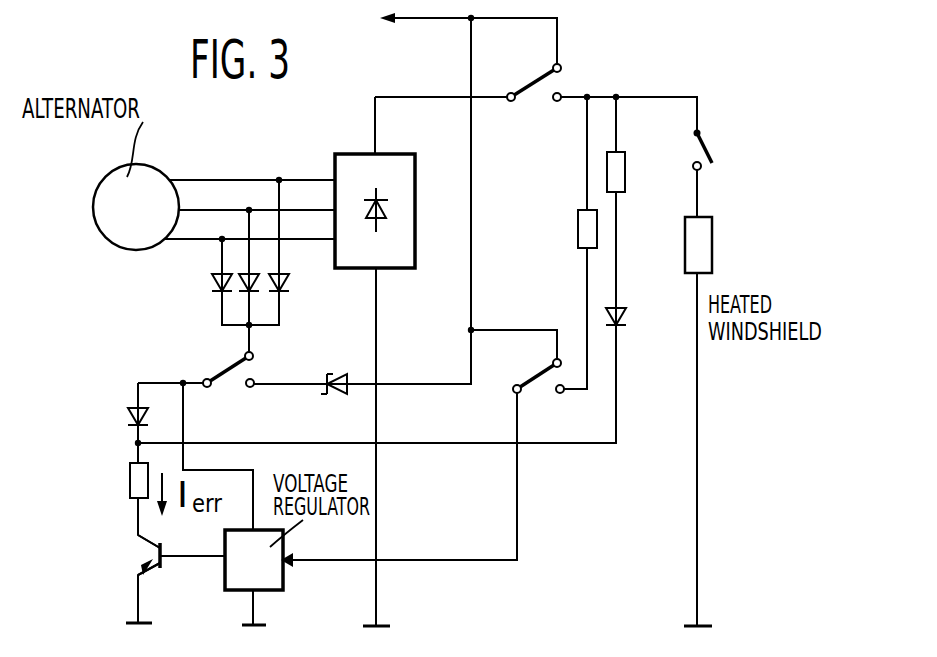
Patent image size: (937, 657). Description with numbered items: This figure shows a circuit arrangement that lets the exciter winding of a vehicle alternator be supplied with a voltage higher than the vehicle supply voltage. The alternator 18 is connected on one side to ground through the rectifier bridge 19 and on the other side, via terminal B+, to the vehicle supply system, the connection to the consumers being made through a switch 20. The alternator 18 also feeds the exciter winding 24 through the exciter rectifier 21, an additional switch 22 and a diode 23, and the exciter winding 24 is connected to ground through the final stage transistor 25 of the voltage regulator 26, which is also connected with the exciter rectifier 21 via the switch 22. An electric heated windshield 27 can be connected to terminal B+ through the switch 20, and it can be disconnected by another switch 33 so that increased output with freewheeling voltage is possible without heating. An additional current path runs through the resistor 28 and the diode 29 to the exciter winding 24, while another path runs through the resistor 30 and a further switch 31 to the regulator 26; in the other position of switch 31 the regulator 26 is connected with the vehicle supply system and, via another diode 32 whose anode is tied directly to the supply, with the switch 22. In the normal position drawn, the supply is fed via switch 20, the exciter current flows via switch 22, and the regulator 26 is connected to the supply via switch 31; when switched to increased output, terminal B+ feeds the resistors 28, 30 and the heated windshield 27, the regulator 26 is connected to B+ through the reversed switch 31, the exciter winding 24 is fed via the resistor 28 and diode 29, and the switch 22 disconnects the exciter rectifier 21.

The alternator 18 is at (145, 176).
The rectifier bridge 19 is at (418, 176).
The switch 20 is at (532, 85).
The exciter rectifier 21 is at (206, 283).
The additional switch 22 is at (230, 375).
The diode 23 is at (128, 410).
The exciter winding 24 is at (128, 483).
The final stage transistor 25 is at (148, 570).
The voltage regulator 26 is at (283, 576).
The heated windshield 27 is at (707, 250).
The resistor 28 is at (620, 168).
The diode 29 is at (625, 318).
The resistor 30 is at (578, 230).
The switch 31 is at (538, 368).
The diode 32 is at (328, 392).
The switch 33 is at (706, 148).